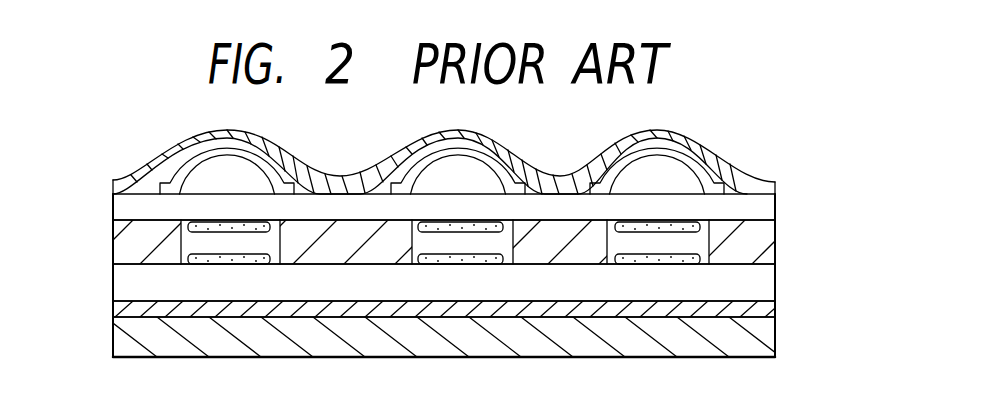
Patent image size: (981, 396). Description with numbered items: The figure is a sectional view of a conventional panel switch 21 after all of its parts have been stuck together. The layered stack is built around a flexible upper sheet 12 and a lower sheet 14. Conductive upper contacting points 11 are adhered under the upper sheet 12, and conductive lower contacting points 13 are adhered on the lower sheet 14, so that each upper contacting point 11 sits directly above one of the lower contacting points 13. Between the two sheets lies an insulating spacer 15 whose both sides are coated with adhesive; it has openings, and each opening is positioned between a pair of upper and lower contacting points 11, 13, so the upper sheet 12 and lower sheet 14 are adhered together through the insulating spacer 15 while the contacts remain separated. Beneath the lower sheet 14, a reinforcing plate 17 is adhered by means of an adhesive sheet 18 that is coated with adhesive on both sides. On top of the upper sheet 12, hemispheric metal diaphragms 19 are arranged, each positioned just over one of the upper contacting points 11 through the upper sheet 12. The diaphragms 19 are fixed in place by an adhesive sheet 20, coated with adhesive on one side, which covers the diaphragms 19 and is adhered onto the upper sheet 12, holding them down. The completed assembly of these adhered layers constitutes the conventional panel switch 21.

The conventional panel switch 21 is at (86, 186).
The upper sheet 12 is at (760, 208).
The insulating spacer 15 is at (760, 244).
The lower sheet 14 is at (760, 284).
The adhesive sheet 18 is at (760, 309).
The reinforcing plate 17 is at (760, 345).
The upper contacting point 11 is at (482, 226).
The lower contacting point 13 is at (452, 259).
The hemispheric metal diaphragm 19 is at (698, 172).
The adhesive sheet 20 is at (747, 182).